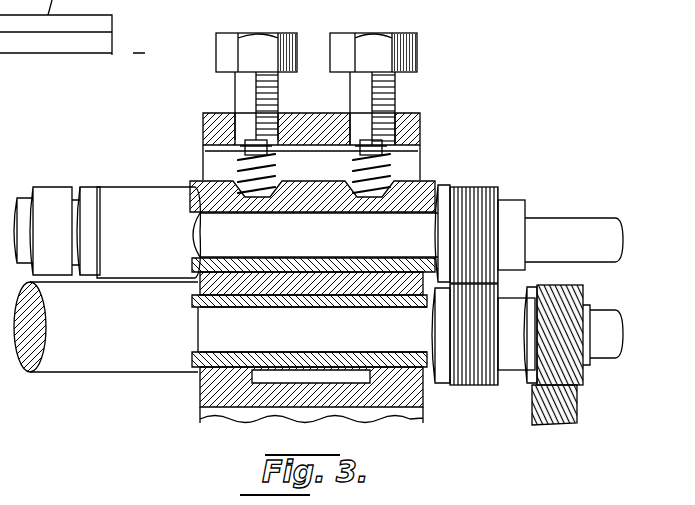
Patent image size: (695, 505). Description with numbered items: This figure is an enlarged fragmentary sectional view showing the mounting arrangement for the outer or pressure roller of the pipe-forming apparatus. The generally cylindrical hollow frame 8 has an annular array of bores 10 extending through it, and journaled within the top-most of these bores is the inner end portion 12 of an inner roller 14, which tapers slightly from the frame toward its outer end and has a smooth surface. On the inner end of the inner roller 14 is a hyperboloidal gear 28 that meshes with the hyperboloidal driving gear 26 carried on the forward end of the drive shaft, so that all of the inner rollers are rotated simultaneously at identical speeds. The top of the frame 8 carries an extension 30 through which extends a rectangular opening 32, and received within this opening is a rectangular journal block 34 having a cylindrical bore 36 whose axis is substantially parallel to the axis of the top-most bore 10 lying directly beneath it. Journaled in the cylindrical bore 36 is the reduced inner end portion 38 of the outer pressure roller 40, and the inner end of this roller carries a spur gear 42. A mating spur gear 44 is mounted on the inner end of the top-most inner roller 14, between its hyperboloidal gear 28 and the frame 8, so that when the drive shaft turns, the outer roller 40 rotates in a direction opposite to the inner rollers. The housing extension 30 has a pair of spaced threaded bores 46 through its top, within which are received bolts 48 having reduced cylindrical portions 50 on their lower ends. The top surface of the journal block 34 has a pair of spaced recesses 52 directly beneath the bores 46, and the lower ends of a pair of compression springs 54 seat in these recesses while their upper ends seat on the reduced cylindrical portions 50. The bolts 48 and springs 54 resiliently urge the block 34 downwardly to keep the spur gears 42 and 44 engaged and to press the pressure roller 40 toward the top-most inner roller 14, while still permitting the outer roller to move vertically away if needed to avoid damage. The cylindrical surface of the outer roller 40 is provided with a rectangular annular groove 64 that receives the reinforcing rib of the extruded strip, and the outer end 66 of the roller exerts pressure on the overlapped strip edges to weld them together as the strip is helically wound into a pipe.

The hollow frame 8 is at (204, 396).
The bores 10 is at (202, 385).
The inner end portion 12 is at (330, 300).
The inner roller 14 is at (58, 373).
The hyperboloidal driving gear 26 is at (568, 398).
The hyperboloidal gear 28 is at (548, 288).
The extension 30 is at (410, 118).
The rectangular opening 32 is at (418, 174).
The rectangular journal block 34 is at (205, 180).
The cylindrical bore 36 is at (280, 222).
The reduced inner end portion 38 is at (262, 241).
The outer pressure roller 40 is at (126, 188).
The spur gear 42 is at (478, 189).
The mating spur gear 44 is at (457, 386).
The threaded bores 46 is at (248, 116).
The bolts 48 is at (340, 45).
The reduced cylindrical portions 50 is at (367, 146).
The recesses 52 is at (372, 202).
The compression springs 54 is at (243, 160).
The rectangular annular groove 64 is at (90, 191).
The outer end 66 is at (55, 196).